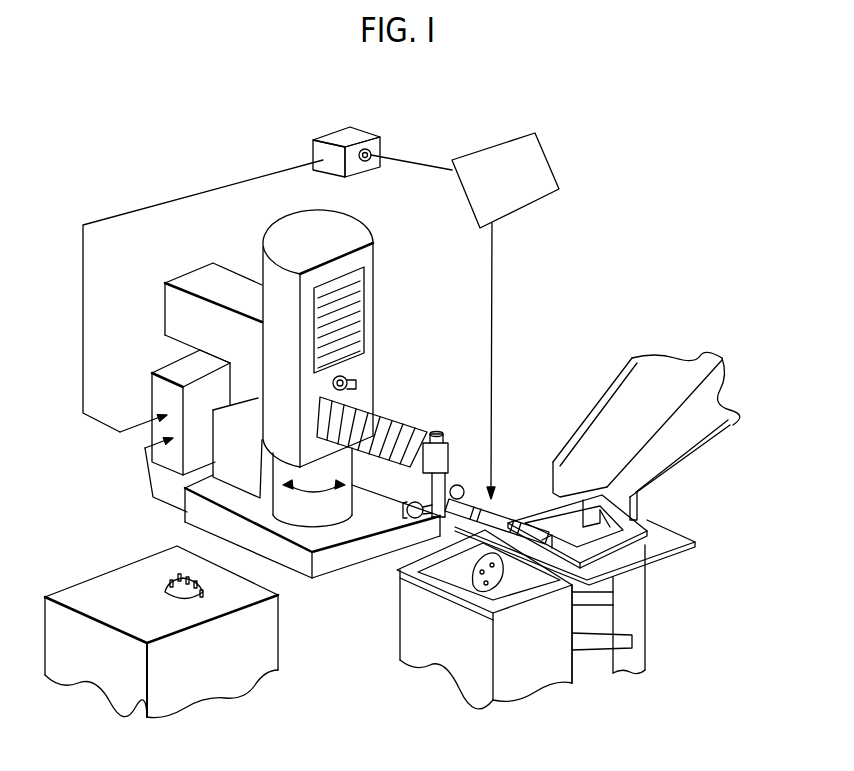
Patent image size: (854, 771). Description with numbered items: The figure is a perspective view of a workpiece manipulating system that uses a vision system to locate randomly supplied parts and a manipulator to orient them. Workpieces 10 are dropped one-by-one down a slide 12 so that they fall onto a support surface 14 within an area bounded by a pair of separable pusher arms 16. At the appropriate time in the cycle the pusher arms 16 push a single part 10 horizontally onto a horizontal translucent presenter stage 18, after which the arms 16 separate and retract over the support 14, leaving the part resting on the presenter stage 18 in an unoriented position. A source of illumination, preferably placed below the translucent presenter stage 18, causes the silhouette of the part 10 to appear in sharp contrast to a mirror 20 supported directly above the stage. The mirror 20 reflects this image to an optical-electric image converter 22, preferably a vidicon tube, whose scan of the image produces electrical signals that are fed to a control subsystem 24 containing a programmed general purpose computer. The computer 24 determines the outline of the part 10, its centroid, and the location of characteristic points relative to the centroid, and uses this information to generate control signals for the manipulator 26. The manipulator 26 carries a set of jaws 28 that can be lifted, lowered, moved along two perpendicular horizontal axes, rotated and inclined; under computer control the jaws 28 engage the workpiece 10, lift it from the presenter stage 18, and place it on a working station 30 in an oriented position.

The workpiece 10 is at (503, 574).
The slide 12 is at (705, 412).
The support surface 14 is at (672, 540).
The pusher arms 16 is at (548, 507).
The presenter stage 18 is at (468, 587).
The mirror 20 is at (542, 176).
The optical-electric image converter 22 is at (365, 132).
The control subsystem 24 is at (165, 400).
The manipulator 26 is at (392, 330).
The jaws 28 is at (490, 503).
The working station 30 is at (218, 603).